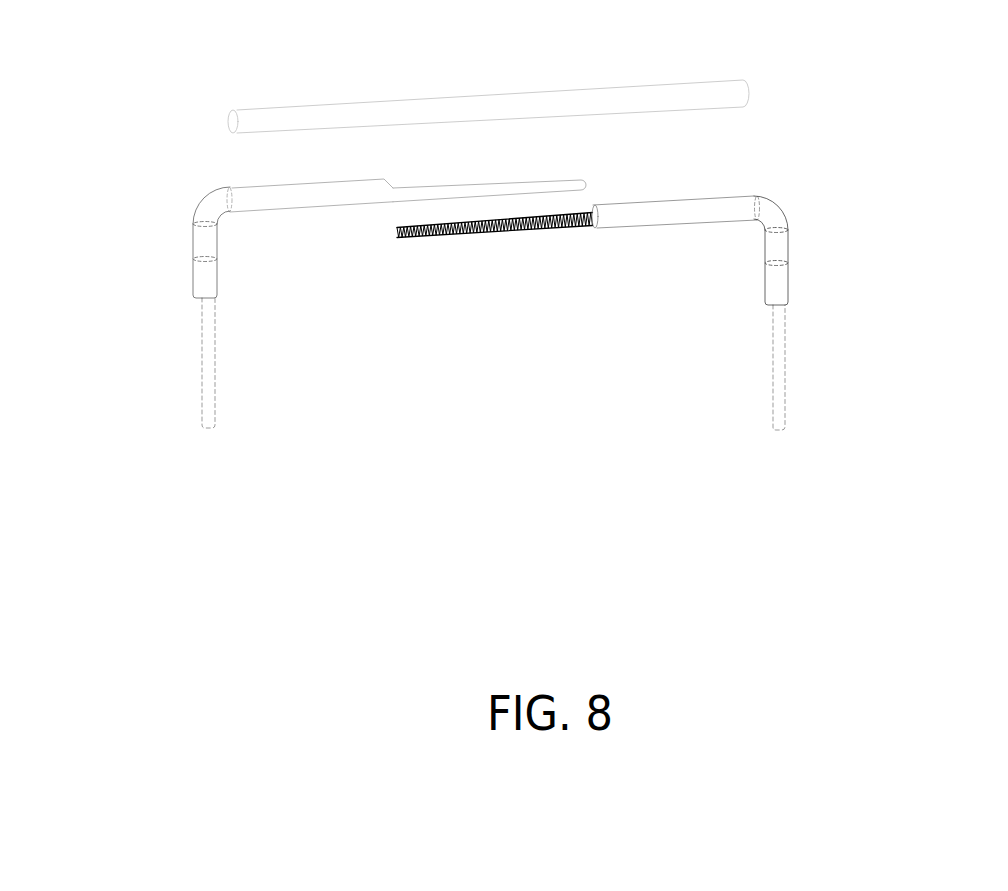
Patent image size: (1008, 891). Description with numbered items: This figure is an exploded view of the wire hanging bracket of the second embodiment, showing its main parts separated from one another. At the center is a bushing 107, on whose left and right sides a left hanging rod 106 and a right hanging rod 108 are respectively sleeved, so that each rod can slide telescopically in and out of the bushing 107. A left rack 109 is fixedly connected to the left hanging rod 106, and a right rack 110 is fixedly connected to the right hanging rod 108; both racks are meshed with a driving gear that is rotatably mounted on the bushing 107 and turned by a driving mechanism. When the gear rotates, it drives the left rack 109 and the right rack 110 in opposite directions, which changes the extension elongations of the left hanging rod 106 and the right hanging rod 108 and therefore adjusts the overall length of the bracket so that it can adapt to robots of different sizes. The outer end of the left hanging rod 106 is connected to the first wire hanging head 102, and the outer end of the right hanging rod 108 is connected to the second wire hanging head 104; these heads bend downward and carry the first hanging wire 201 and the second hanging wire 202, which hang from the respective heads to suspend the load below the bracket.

The first wire hanging head 102 is at (205, 282).
The second wire hanging head 104 is at (778, 283).
The left hanging rod 106 is at (262, 200).
The bushing 107 is at (470, 108).
The right hanging rod 108 is at (685, 212).
The left rack 109 is at (458, 192).
The right rack 110 is at (512, 233).
The first hanging wire 201 is at (210, 378).
The second hanging wire 202 is at (782, 382).